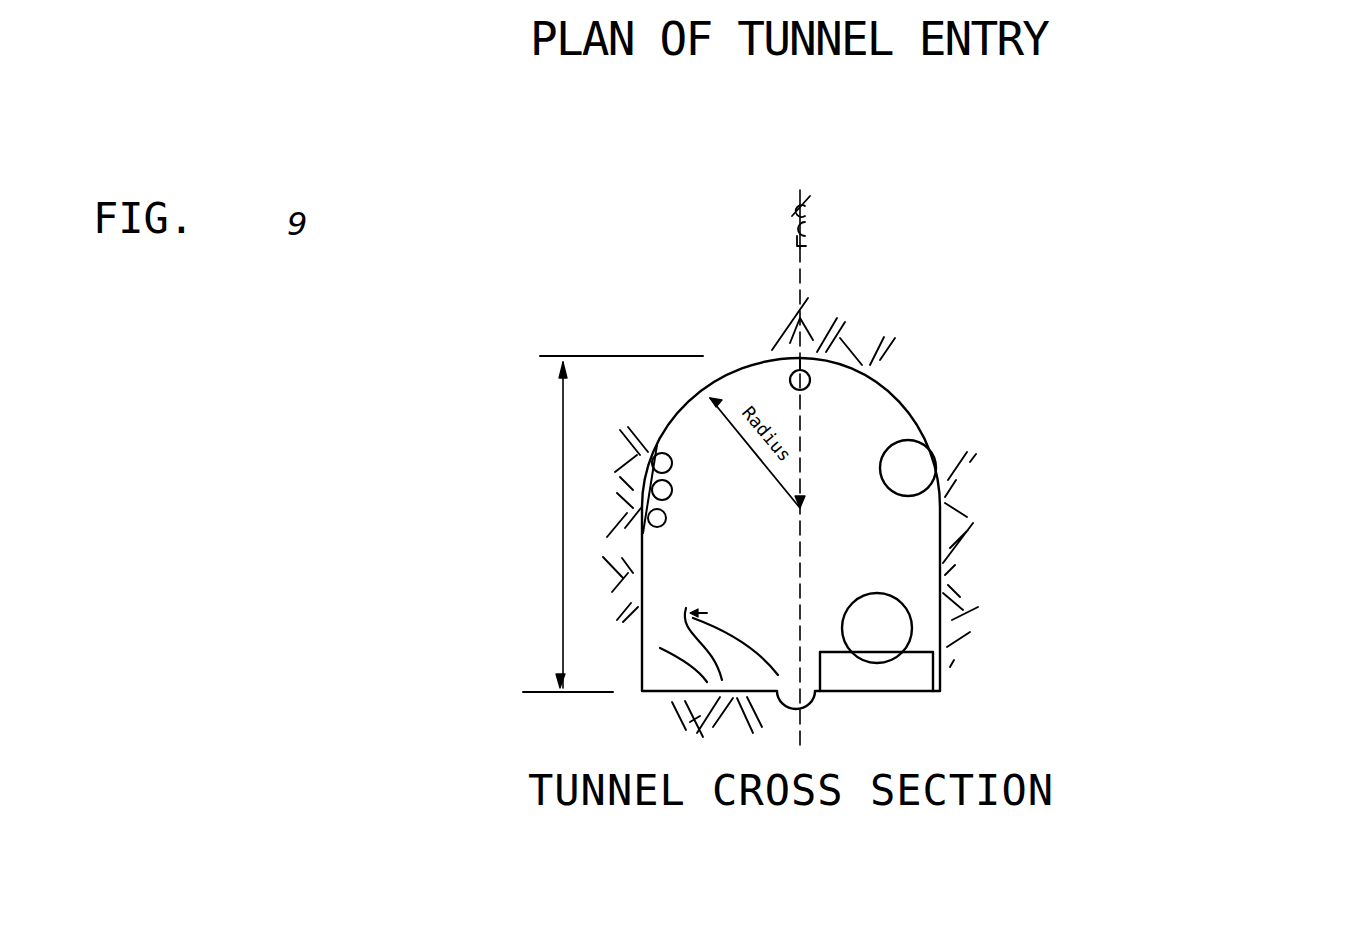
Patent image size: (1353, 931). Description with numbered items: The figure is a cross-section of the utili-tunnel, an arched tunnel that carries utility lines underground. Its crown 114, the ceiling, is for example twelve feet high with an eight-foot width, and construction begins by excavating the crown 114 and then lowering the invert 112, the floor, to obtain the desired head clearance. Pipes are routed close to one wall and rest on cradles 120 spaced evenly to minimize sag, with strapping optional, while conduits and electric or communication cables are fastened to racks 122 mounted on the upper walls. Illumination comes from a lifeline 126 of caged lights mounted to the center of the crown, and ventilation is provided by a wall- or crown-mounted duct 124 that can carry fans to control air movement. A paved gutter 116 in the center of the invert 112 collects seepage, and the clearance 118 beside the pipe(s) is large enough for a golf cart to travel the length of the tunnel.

The invert 112 is at (660, 648).
The crown 114 is at (560, 485).
The paved gutter 116 is at (693, 618).
The clearance 118 is at (766, 626).
The cradles 120 is at (903, 592).
The racks 122 is at (643, 460).
The duct 124 is at (935, 445).
The lifeline 126 is at (773, 346).